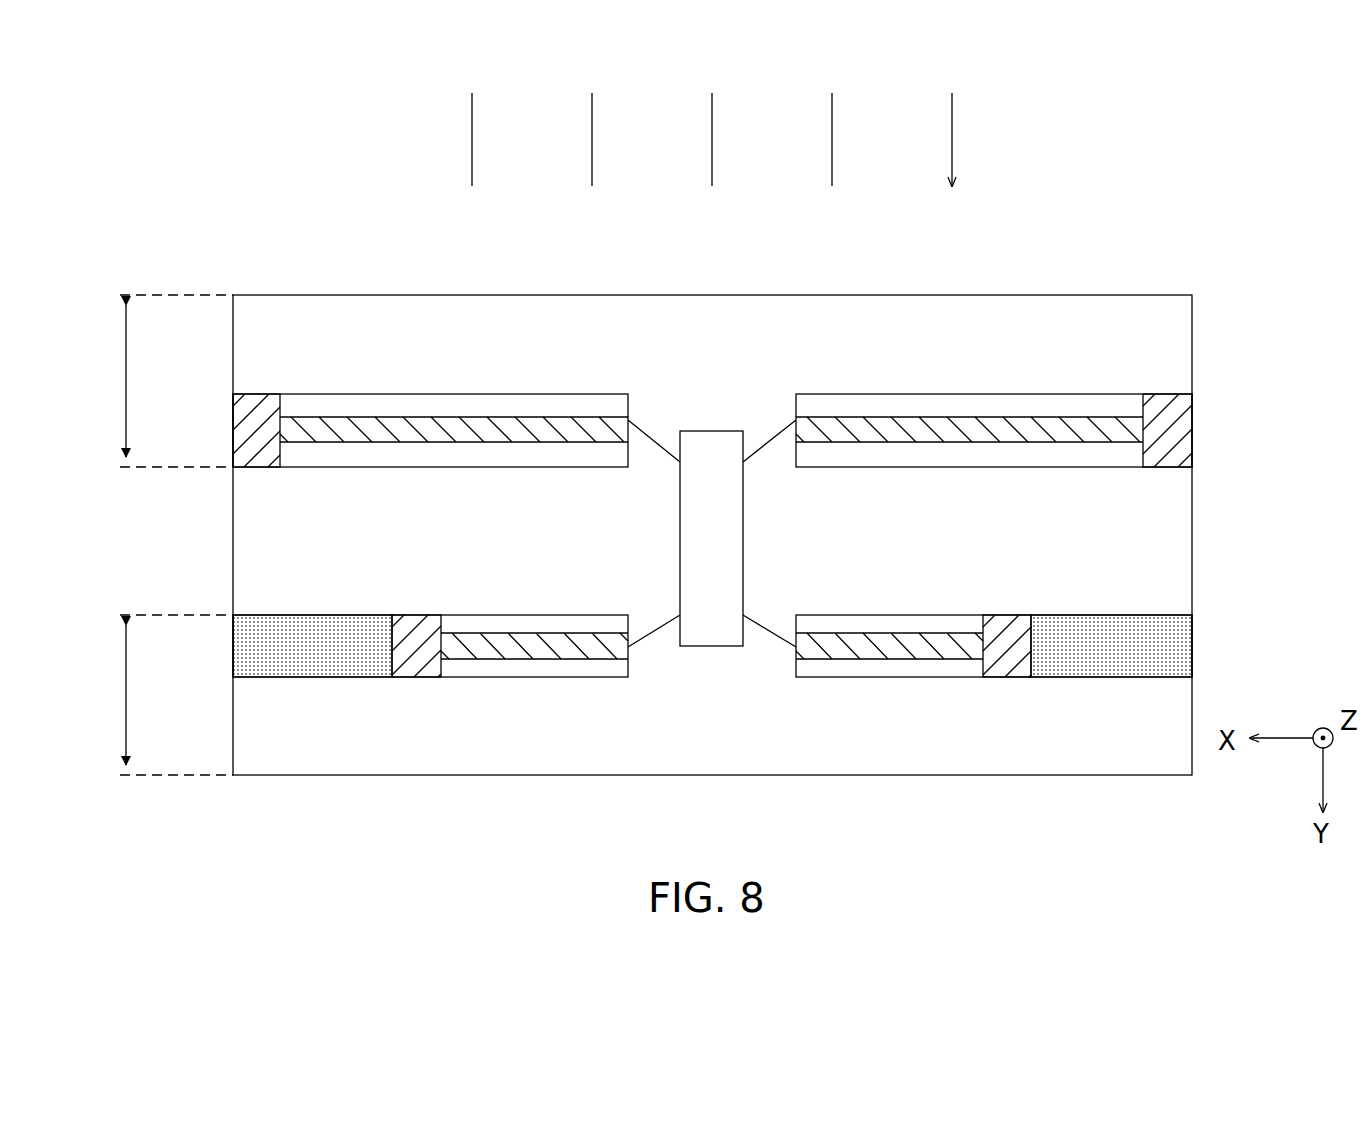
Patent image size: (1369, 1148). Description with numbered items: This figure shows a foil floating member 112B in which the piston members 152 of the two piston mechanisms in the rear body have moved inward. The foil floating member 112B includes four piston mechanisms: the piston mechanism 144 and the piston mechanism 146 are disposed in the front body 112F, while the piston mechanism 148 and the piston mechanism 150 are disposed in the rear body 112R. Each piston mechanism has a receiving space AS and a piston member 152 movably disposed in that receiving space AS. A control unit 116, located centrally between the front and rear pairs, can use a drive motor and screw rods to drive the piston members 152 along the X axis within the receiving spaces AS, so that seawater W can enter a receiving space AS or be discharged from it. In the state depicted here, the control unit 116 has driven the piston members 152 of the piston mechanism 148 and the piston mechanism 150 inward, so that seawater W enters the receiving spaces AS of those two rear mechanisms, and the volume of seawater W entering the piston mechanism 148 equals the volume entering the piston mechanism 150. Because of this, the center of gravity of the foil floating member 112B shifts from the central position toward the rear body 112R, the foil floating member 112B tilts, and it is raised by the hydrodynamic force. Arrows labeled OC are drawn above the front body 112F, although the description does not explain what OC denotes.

The foil floating member 112B is at (1200, 284).
The front body 112F is at (145, 381).
The rear body 112R is at (144, 695).
The control unit 116 is at (706, 430).
The piston mechanism 144 is at (333, 394).
The piston mechanism 146 is at (1084, 394).
The piston mechanism 148 is at (337, 678).
The piston mechanism 150 is at (1088, 678).
The piston member 152 is at (252, 429).
The receiving space AS is at (522, 407).
The seawater W is at (250, 650).
The optical signal OC is at (952, 138).